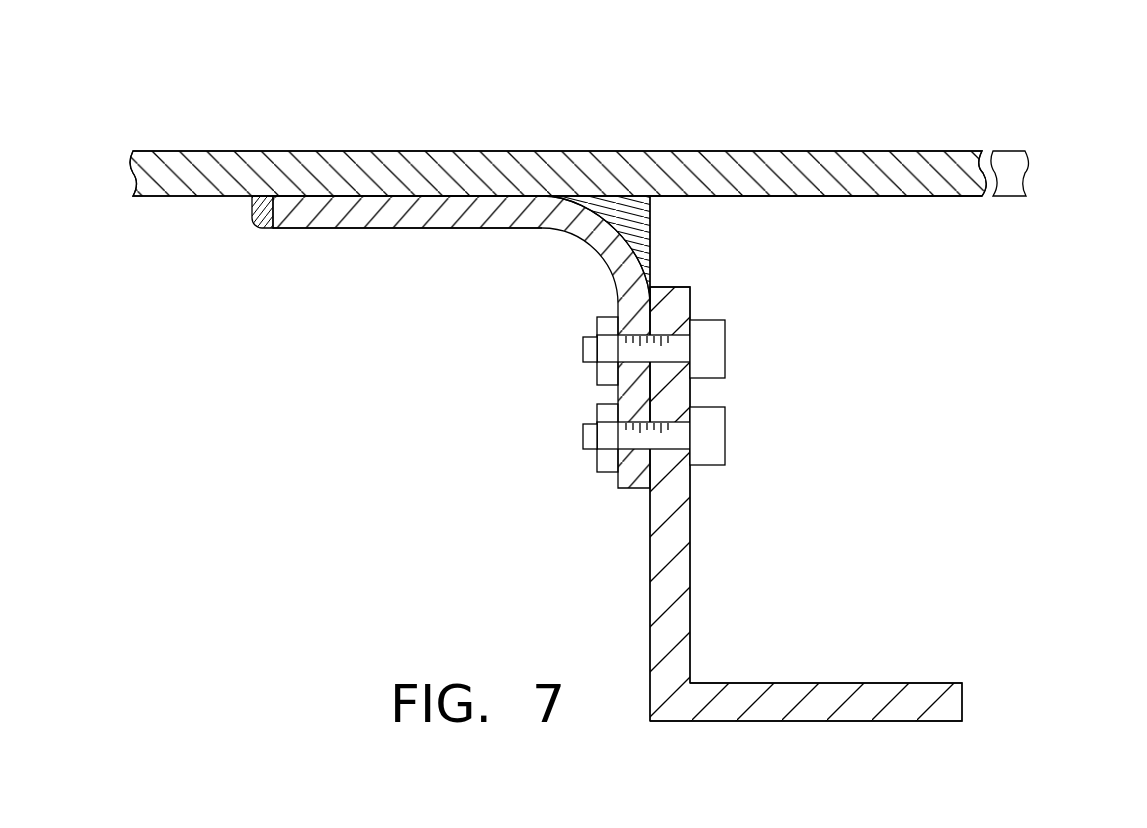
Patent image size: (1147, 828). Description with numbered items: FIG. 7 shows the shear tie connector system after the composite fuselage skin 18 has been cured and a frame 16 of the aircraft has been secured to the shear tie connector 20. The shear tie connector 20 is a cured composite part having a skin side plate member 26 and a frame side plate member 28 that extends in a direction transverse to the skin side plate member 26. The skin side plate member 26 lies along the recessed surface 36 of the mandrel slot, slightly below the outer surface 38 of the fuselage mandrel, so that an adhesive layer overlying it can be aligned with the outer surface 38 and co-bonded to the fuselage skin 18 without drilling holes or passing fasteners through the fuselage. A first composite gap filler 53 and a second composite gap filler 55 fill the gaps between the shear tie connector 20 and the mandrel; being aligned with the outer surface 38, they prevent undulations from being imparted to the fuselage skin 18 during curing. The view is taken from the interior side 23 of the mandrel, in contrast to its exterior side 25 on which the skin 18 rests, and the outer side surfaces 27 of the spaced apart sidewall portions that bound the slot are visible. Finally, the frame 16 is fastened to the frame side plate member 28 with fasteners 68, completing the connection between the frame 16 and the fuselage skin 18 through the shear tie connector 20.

The exterior side 25 is at (452, 46).
The composite fuselage skin 18 is at (1027, 170).
The outer surface 38 is at (897, 197).
The shear tie connector 20 is at (515, 220).
The skin side plate member 26 is at (390, 212).
The recessed surface 36 is at (351, 232).
The first composite gap filler 53 is at (650, 208).
The frame side plate member 28 is at (652, 250).
The second composite gap filler 55 is at (263, 213).
The interior side 23 is at (803, 601).
The outer side surfaces 27 is at (649, 517).
The frame 16 is at (778, 702).
The fasteners 68 is at (728, 348).